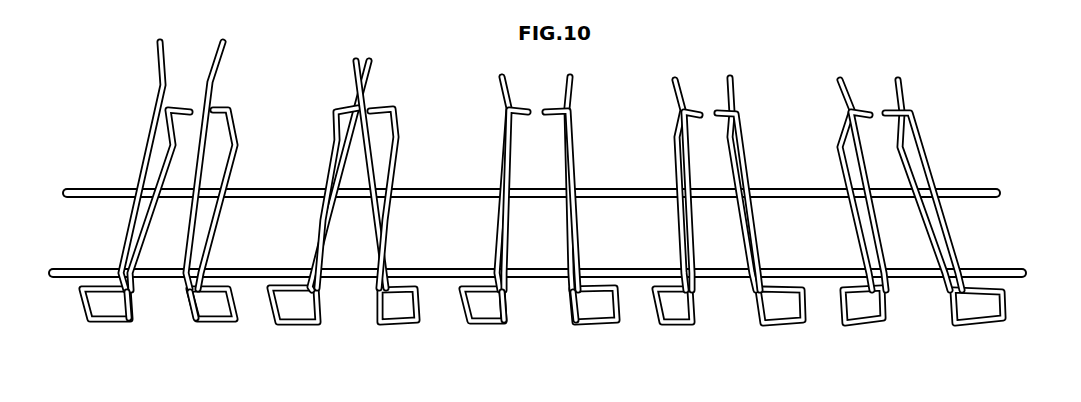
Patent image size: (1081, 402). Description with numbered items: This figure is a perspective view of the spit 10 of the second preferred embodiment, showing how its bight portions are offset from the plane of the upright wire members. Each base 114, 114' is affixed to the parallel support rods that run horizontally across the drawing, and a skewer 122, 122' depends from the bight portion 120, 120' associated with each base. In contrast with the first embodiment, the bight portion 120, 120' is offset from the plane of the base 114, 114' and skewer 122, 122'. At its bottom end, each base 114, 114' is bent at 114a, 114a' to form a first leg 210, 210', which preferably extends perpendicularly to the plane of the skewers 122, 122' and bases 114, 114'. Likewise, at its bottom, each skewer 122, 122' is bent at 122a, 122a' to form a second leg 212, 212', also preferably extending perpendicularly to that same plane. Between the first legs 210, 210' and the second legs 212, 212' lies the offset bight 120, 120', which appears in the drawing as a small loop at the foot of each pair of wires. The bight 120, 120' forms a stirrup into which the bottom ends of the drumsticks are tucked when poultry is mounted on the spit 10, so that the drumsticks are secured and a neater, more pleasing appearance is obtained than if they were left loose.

The spit 10 is at (973, 102).
The base 114 is at (136, 200).
The base 114' is at (242, 199).
The bend of base 114a is at (147, 326).
The bend of base 114a' is at (211, 335).
The bight portion 120 is at (842, 327).
The bight portion 120' is at (992, 328).
The skewer 122 is at (122, 166).
The skewer 122' is at (244, 165).
The bend of skewer 122a is at (505, 327).
The bend of skewer 122a' is at (571, 327).
The first leg 210 is at (101, 328).
The first leg 210' is at (230, 326).
The second leg 212 is at (460, 327).
The second leg 212' is at (619, 325).